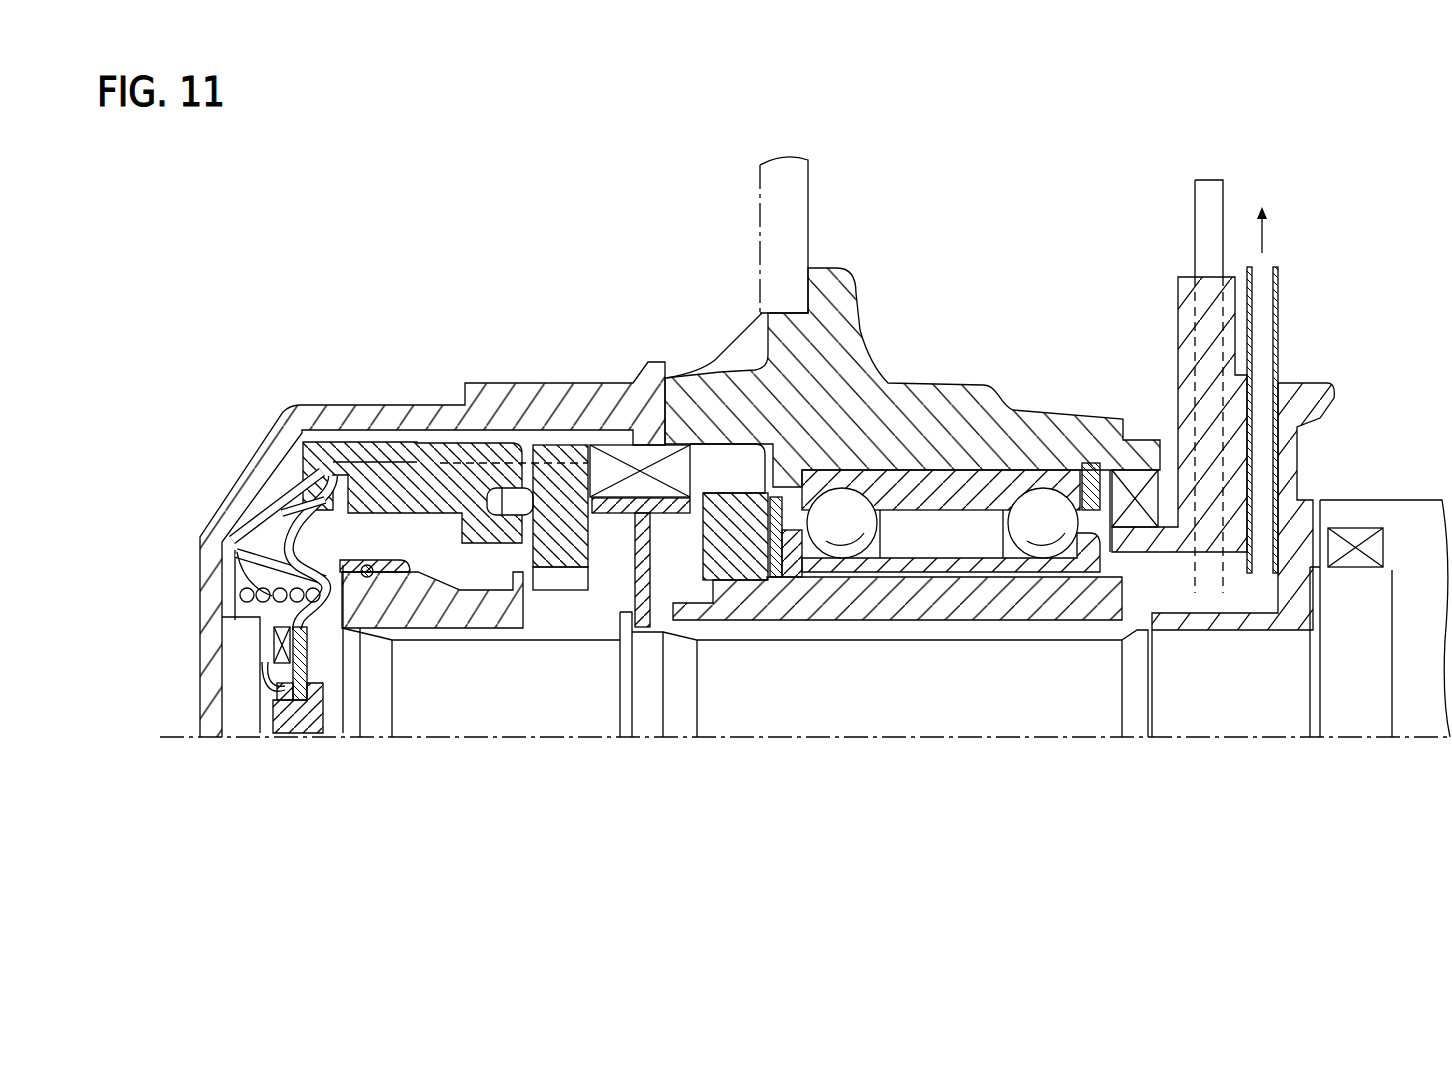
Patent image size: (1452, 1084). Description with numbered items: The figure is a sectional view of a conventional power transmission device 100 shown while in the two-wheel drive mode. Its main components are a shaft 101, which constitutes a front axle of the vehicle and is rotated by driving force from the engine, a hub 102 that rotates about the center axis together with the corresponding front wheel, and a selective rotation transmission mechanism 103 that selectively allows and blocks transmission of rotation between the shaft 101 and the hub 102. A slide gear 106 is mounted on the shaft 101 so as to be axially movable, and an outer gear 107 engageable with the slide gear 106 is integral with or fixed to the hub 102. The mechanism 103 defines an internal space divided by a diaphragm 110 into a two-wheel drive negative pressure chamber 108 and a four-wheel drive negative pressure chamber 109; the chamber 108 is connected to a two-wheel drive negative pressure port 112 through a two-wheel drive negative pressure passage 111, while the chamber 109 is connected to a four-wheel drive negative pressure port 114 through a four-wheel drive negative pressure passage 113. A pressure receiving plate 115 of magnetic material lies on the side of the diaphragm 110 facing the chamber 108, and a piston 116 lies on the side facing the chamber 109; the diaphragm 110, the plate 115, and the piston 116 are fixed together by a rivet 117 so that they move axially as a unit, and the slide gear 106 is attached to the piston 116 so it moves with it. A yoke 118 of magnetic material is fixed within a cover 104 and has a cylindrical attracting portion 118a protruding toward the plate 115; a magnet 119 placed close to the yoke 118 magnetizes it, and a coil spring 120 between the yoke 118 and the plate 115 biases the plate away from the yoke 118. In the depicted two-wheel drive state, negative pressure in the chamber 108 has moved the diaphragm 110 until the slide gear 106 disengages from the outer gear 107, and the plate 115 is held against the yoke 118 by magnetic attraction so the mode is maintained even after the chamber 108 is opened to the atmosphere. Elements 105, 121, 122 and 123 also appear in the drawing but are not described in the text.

The power transmission device 100 is at (905, 325).
The shaft 101 is at (990, 712).
The hub 102 is at (960, 398).
The selective rotation transmission mechanism 103 is at (278, 485).
The cover 104 is at (350, 432).
The bracket 105 is at (1290, 507).
The slide gear 106 is at (455, 612).
The outer gear 107 is at (556, 478).
The two-wheel drive negative pressure chamber 108 is at (228, 527).
The four-wheel drive negative pressure chamber 109 is at (383, 518).
The diaphragm 110 is at (286, 494).
The two-wheel drive negative pressure passage 111 is at (720, 443).
The two-wheel drive negative pressure port 112 is at (1263, 303).
The four-wheel drive negative pressure passage 113 is at (801, 633).
The four-wheel drive negative pressure port 114 is at (1208, 213).
The pressure receiving plate 115 is at (283, 691).
The piston 116 is at (305, 630).
The rivet 117 is at (300, 720).
The yoke 118 is at (246, 596).
The attracting portion 118a is at (283, 684).
The magnet 119 is at (273, 636).
The coil spring 120 is at (250, 577).
The coil 121 is at (635, 457).
The seal 122 is at (1133, 480).
The seal ring 123 is at (1360, 537).